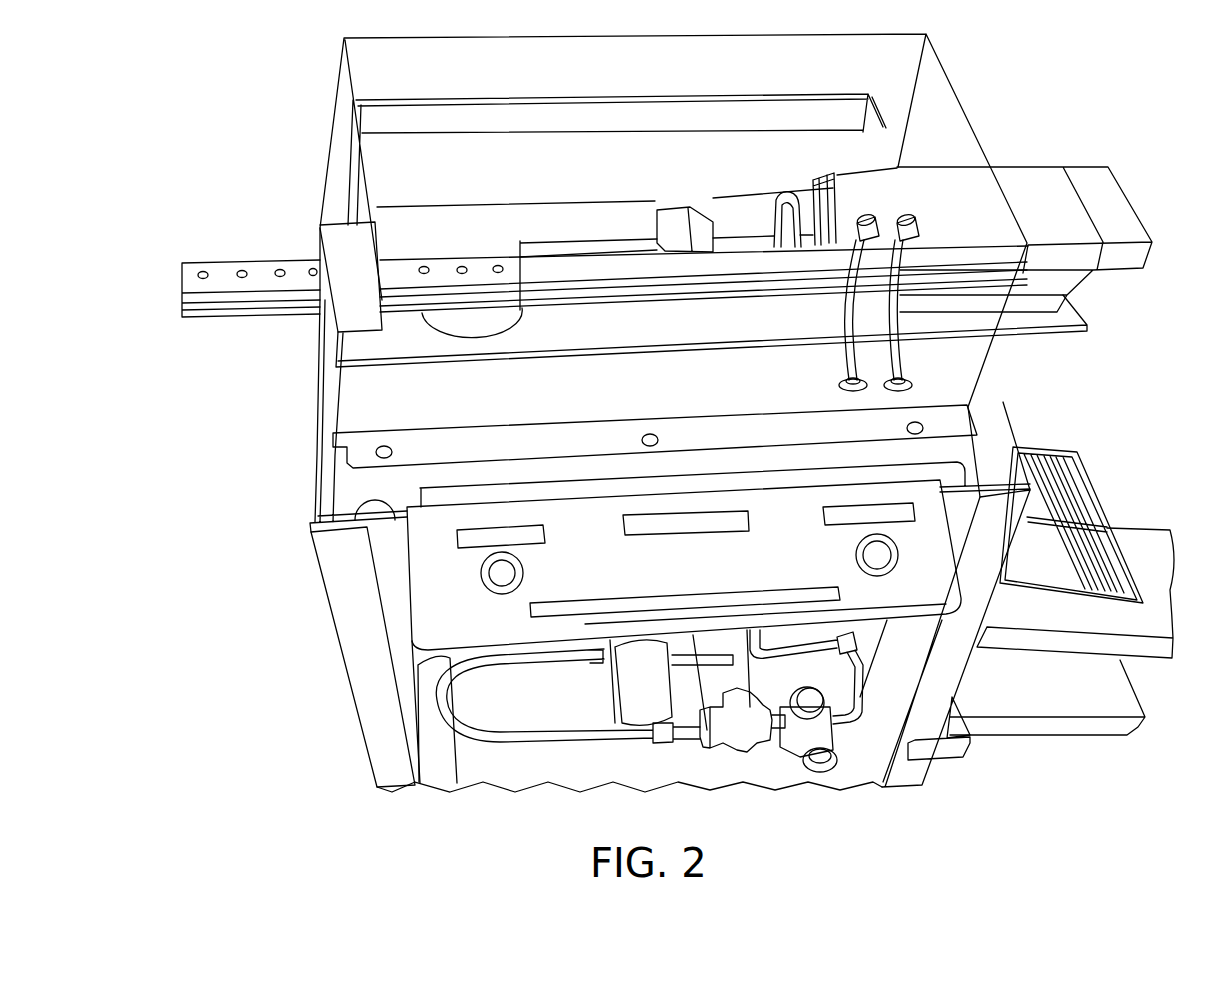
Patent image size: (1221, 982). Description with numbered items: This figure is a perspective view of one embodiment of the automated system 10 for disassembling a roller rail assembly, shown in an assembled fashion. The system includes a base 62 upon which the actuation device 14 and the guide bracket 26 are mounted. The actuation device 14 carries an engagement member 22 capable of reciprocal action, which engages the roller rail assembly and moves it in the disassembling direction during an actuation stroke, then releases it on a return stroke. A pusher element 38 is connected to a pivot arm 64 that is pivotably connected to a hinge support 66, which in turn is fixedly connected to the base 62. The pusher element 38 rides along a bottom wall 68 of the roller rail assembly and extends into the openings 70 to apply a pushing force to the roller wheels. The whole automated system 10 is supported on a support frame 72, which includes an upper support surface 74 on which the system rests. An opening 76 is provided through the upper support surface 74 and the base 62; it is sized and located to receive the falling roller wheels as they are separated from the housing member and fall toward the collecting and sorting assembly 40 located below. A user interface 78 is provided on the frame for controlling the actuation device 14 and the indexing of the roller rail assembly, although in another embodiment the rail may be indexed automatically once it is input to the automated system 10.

The automated system 10 is at (573, 93).
The actuation device 14 is at (942, 182).
The engagement member 22 is at (230, 252).
The guide bracket 26 is at (365, 232).
The pusher element 38 is at (678, 215).
The collecting and sorting assembly 40 is at (757, 757).
The base 62 is at (580, 340).
The pivot arm 64 is at (748, 226).
The hinge support 66 is at (823, 173).
The bottom wall 68 is at (499, 269).
The openings 70 is at (463, 270).
The support frame 72 is at (318, 587).
The upper support surface 74 is at (368, 408).
The opening 76 is at (470, 334).
The user interface 78 is at (431, 607).